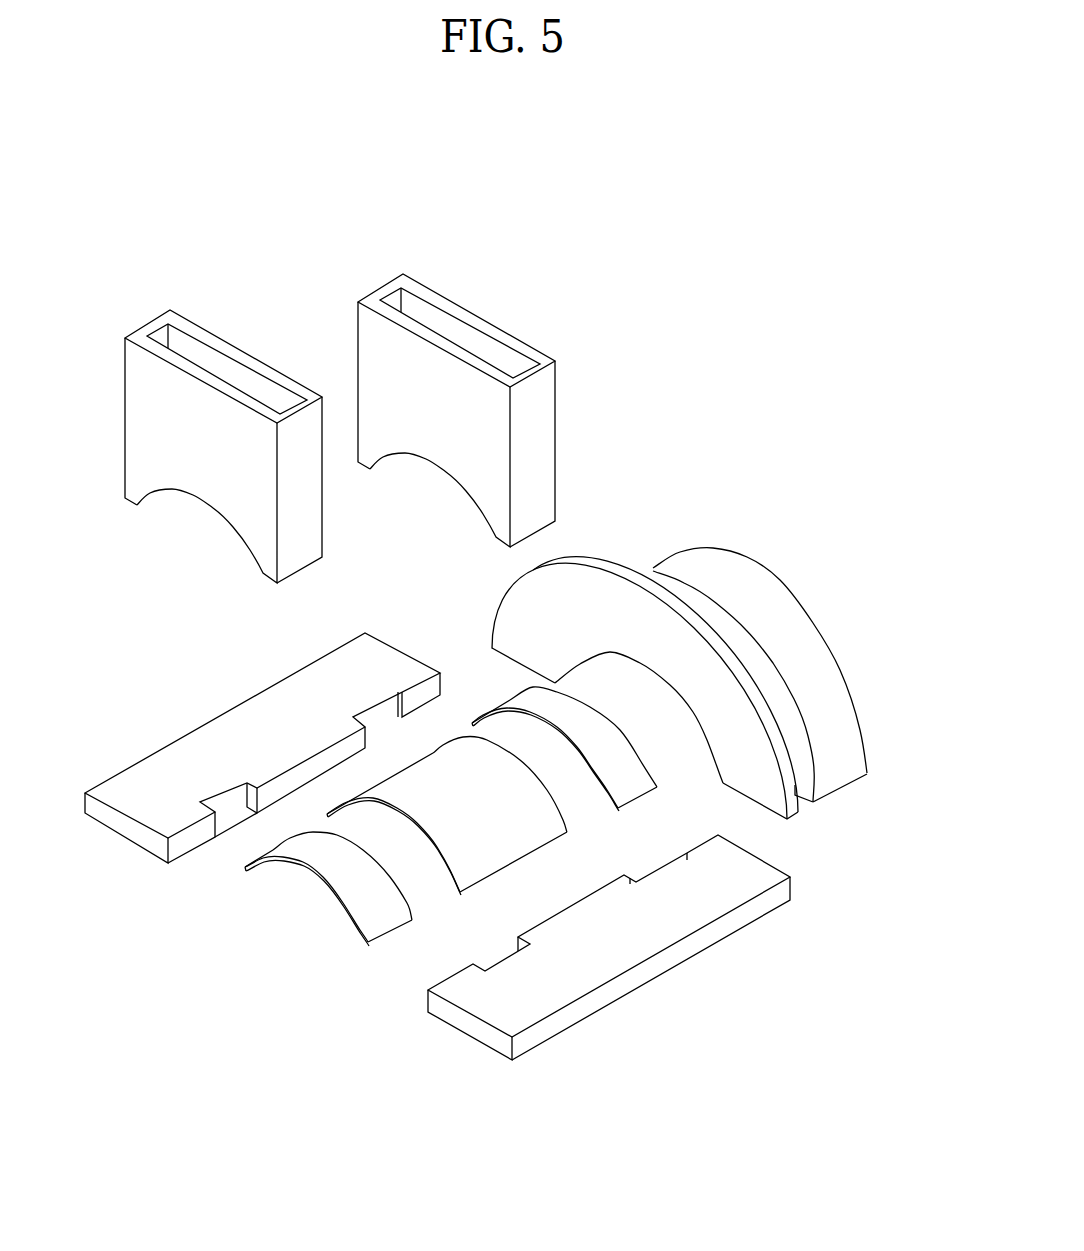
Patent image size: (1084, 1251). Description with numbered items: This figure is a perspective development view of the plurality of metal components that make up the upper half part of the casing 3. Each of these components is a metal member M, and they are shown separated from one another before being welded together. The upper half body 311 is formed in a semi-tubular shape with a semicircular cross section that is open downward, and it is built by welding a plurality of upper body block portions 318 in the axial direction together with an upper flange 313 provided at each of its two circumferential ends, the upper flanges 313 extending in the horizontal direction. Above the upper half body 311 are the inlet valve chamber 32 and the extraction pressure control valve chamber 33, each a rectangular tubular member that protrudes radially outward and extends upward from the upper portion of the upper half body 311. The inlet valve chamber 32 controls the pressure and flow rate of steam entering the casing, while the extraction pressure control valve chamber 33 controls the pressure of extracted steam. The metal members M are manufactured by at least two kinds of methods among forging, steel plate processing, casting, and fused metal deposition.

The casing 3 is at (638, 306).
The inlet valve chamber 32 is at (226, 338).
The extraction pressure control valve chamber 33 is at (445, 297).
The metal member M is at (558, 438).
The upper half body 311 is at (800, 550).
The upper flange 313 is at (215, 735).
The upper body block portion 318 is at (627, 560).